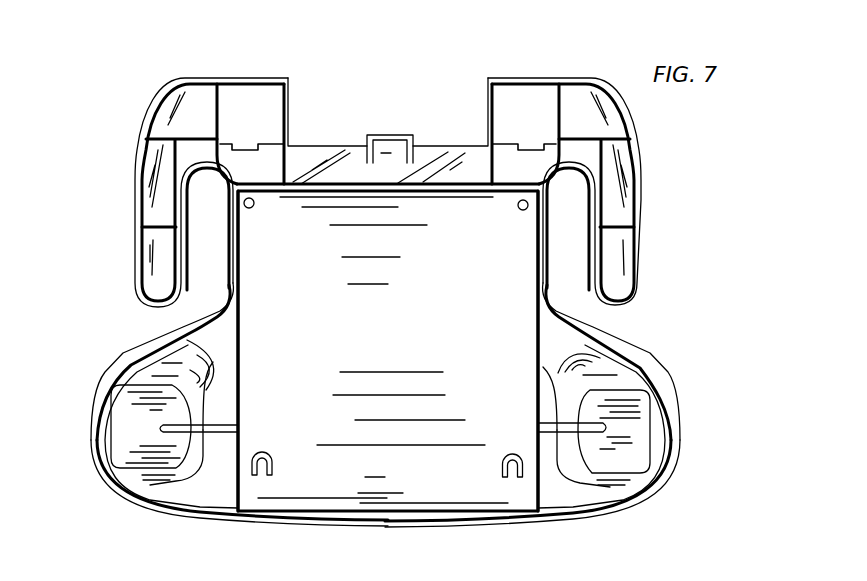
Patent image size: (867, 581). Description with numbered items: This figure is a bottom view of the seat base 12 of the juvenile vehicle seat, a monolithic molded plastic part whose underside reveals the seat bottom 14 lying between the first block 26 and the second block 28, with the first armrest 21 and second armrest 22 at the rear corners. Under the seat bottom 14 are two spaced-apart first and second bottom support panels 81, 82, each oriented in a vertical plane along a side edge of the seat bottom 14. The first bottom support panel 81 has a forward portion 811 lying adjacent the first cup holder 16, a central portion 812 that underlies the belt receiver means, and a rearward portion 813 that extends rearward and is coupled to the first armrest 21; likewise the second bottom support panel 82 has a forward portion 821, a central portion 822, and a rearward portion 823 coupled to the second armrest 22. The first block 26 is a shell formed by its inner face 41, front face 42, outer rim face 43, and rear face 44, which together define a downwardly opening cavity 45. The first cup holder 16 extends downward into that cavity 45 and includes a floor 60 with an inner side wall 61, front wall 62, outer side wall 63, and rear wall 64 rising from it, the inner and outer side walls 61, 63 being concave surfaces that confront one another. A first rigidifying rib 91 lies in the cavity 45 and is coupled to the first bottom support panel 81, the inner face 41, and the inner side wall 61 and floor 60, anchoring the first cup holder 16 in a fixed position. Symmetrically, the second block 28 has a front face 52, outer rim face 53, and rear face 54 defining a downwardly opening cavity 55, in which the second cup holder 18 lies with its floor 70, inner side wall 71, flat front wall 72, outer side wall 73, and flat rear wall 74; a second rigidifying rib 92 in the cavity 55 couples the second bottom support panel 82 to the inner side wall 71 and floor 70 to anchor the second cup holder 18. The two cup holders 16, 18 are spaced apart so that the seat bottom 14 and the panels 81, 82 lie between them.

The seat base 12 is at (140, 78).
The first armrest 21 is at (127, 258).
The second armrest 22 is at (652, 272).
The first bottom support panel 81 is at (247, 320).
The second bottom support panel 82 is at (530, 305).
The rearward portion 813 is at (225, 113).
The rearward portion 823 is at (553, 115).
The seat bottom 14 is at (383, 410).
The central portion 812 is at (243, 267).
The central portion 822 is at (530, 247).
The forward portion 811 is at (243, 488).
The forward portion 821 is at (533, 489).
The rear face 44 is at (133, 370).
The front face 42 is at (130, 493).
The outer side wall 63 is at (100, 407).
The outer rim face 43 is at (100, 443).
The front wall 62 is at (123, 487).
The downwardly opening cavity 45 is at (147, 368).
The first cup holder 16 is at (197, 397).
The inner face 41 is at (215, 413).
The first rigidifying rib 91 is at (218, 416).
The floor 60 is at (122, 448).
The rear wall 64 is at (168, 387).
The inner side wall 61 is at (232, 443).
The first block 26 is at (176, 480).
The rear face 54 is at (600, 388).
The front face 52 is at (610, 487).
The outer side wall 73 is at (653, 412).
The outer rim face 53 is at (660, 435).
The front wall 72 is at (618, 487).
The downwardly opening cavity 55 is at (625, 387).
The second cup holder 18 is at (572, 395).
The second rigidifying rib 92 is at (588, 437).
The floor 70 is at (640, 464).
The rear wall 74 is at (598, 390).
The inner side wall 71 is at (560, 420).
The second block 28 is at (578, 490).